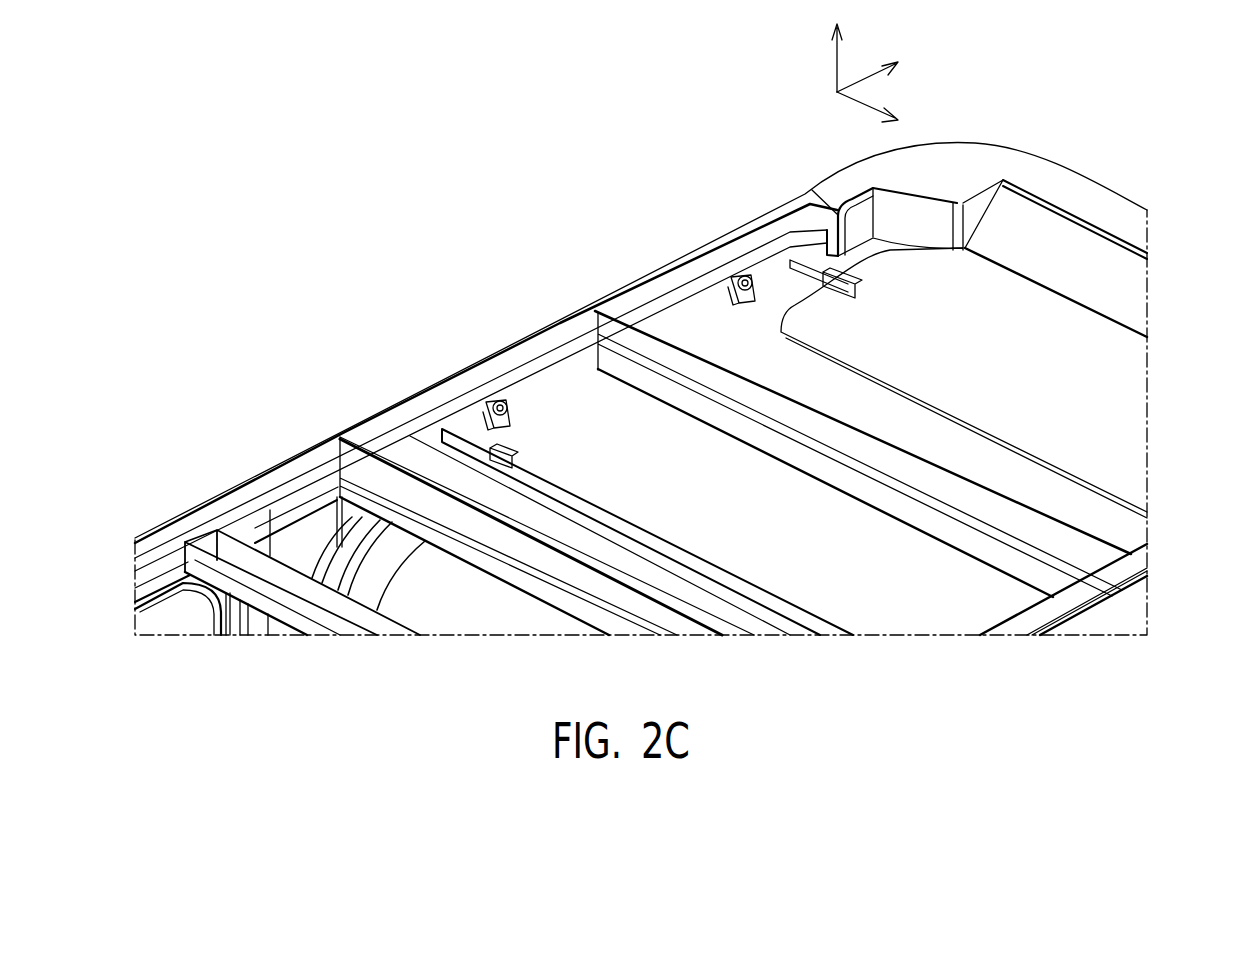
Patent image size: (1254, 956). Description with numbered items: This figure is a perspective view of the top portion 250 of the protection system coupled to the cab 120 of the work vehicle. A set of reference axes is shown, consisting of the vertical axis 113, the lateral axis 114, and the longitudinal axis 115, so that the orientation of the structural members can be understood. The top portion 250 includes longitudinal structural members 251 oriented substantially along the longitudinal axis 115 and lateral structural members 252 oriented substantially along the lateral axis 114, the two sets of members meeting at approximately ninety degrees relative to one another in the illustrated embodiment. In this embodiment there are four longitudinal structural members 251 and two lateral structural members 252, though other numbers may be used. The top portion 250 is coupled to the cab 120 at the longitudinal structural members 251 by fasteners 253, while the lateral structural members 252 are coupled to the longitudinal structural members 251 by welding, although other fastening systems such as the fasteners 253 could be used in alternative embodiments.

The vertical axis 113 is at (837, 62).
The lateral axis 114 is at (858, 100).
The longitudinal axis 115 is at (870, 78).
The cab 120 is at (327, 557).
The top portion 250 is at (543, 192).
The longitudinal structural members 251 is at (641, 300).
The lateral structural members 252 is at (793, 422).
The fasteners 253 is at (737, 280).